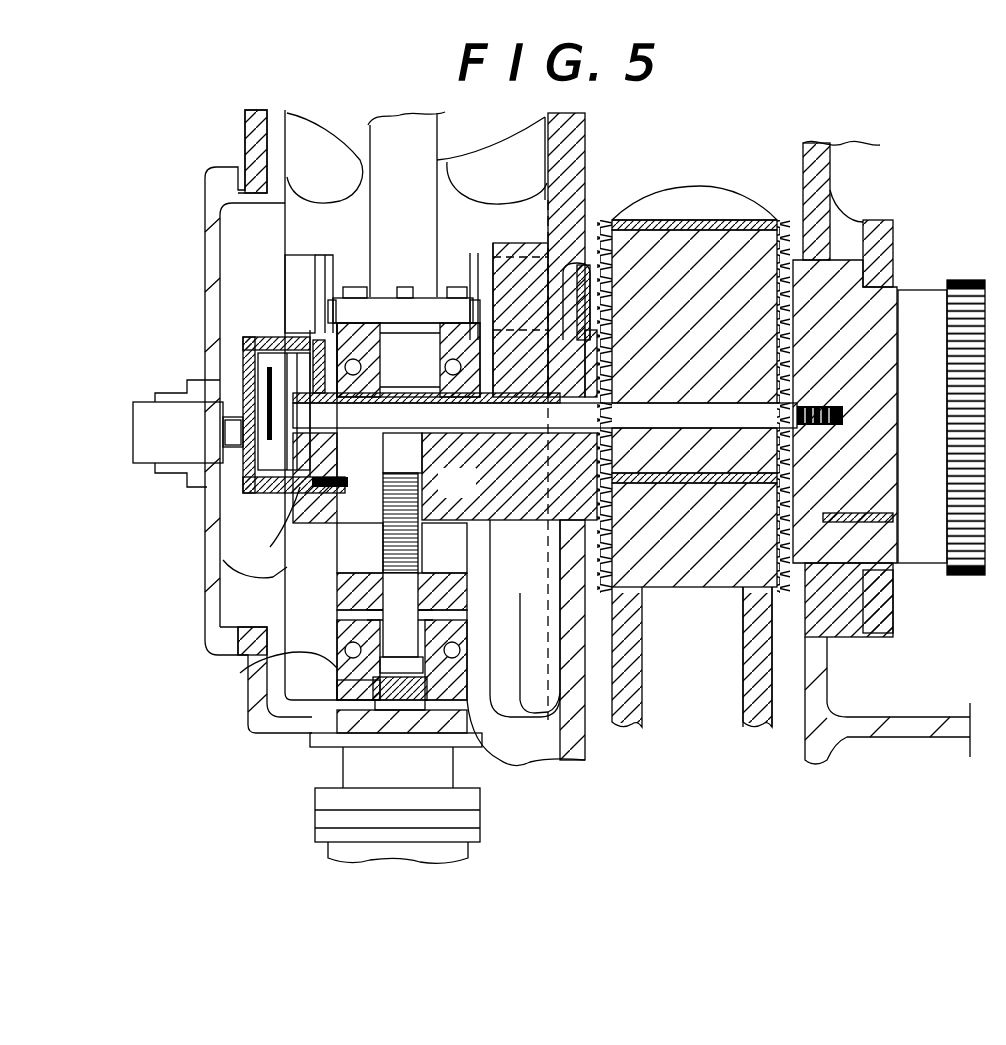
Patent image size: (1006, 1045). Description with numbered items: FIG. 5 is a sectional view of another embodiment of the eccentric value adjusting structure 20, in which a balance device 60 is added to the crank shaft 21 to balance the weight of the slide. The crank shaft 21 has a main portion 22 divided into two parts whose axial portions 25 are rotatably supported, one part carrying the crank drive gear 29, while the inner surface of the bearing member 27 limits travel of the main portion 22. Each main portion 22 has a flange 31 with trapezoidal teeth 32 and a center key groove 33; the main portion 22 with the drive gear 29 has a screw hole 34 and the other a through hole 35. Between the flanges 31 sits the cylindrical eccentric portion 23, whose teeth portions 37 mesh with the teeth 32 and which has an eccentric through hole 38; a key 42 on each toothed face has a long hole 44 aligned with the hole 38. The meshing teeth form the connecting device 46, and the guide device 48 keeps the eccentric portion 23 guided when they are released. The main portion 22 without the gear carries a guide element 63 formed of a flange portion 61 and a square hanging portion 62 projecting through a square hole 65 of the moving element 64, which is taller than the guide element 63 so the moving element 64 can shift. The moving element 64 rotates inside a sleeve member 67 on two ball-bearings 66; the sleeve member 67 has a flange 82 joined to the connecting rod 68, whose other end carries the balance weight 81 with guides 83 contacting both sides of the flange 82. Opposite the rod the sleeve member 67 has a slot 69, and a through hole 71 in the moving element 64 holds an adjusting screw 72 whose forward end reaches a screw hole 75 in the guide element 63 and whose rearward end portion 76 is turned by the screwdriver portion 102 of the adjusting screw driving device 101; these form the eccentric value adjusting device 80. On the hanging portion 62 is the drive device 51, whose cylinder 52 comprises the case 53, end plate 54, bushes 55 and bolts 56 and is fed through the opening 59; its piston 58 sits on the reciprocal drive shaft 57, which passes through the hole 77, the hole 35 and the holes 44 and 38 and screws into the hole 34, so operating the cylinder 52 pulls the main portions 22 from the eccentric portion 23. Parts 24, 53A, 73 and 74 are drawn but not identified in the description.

The eccentric value adjusting structure 20 is at (737, 185).
The crank shaft 21 is at (910, 290).
The main portion 22 is at (867, 387).
The eccentric portion 23 is at (700, 215).
The side plate 24 is at (593, 180).
The axial portion 25 is at (490, 483).
The bearing member 27 is at (877, 538).
The crank drive gear 29 is at (967, 278).
The flange portion 31 is at (837, 640).
The trapezoidal teeth 32 is at (730, 593).
The center key groove 33 is at (748, 645).
The screw hole 34 is at (843, 418).
The through hole 35 is at (620, 433).
The teeth portions 37 is at (640, 232).
The through hole 38 is at (699, 350).
The key 42 is at (590, 258).
The long hole 44 is at (612, 362).
The connecting device 46 is at (735, 500).
The guide device 48 is at (535, 245).
The drive device 51 is at (238, 392).
The cylinder 52 is at (248, 355).
The case 53 is at (270, 547).
The lever arm 53A is at (270, 560).
The end plate 54 is at (243, 467).
The bushes 55 is at (277, 493).
The bolts 56 is at (243, 483).
The reciprocal drive shaft 57 is at (293, 350).
The piston 58 is at (247, 423).
The opening 59 is at (133, 445).
The balance device 60 is at (229, 159).
The flange portion 61 is at (480, 253).
The square hanging portion 62 is at (307, 333).
The guide element 63 is at (330, 480).
The moving element 64 is at (467, 587).
The square hole 65 is at (448, 573).
The ball-bearings 66 is at (245, 670).
The sleeve member 67 is at (447, 710).
The connecting rod 68 is at (370, 127).
The slot 69 is at (387, 720).
The through hole 71 is at (367, 583).
The adjusting screw 72 is at (383, 547).
The bearing 73 is at (340, 627).
The washer 74 is at (463, 627).
The screw hole 75 is at (401, 473).
The rearward end portion 76 is at (340, 680).
The hole 77 is at (245, 443).
The eccentric value adjusting device 80 is at (318, 611).
The balance weight 81 is at (293, 227).
The flange 82 is at (423, 298).
The guides 83 is at (333, 303).
The adjusting screw driving device 101 is at (357, 753).
The screwdriver portion 102 is at (343, 720).